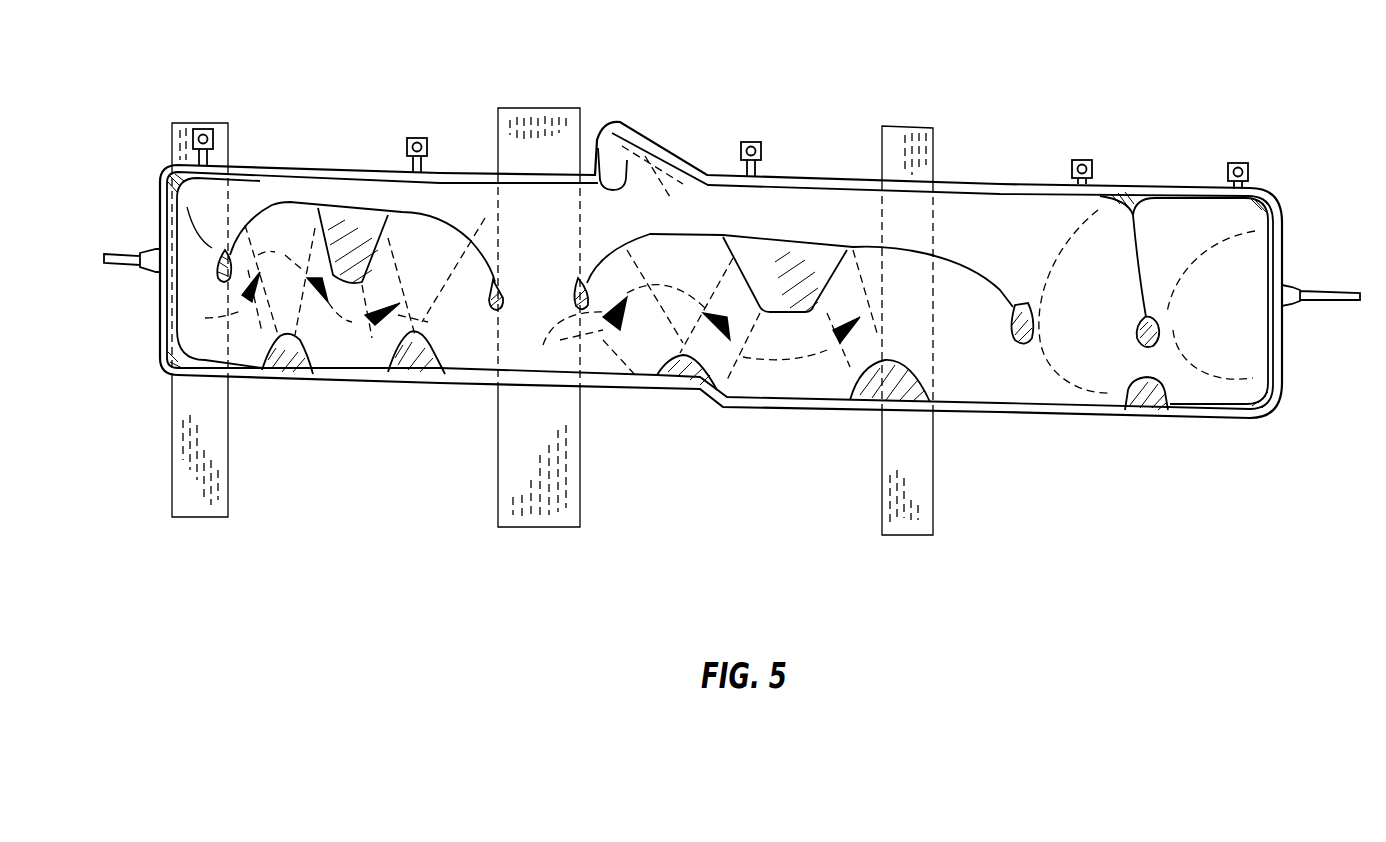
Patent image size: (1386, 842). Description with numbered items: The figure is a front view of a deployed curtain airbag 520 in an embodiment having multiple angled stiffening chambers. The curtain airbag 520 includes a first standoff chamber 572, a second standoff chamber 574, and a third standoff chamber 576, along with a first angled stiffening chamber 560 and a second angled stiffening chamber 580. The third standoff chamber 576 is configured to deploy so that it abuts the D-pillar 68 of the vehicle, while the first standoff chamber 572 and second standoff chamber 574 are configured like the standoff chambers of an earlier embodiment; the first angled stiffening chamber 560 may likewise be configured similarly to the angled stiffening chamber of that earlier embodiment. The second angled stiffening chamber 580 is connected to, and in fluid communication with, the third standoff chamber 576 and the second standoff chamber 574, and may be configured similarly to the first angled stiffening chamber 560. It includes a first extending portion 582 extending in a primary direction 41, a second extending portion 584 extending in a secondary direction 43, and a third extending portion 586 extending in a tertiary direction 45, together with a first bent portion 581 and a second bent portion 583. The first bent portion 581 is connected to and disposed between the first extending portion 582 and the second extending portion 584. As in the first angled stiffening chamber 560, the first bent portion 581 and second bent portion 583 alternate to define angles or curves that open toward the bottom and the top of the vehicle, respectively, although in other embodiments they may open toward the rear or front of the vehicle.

The curtain airbag 520 is at (1012, 133).
The first angled stiffening chamber 560 is at (773, 405).
The D-pillar 68 is at (218, 141).
The first standoff chamber 572 is at (947, 233).
The second standoff chamber 574 is at (543, 250).
The third standoff chamber 576 is at (177, 237).
The second angled stiffening chamber 580 is at (343, 378).
The first bent portion 581 is at (283, 217).
The first extending portion 582 is at (260, 338).
The second bent portion 583 is at (362, 345).
The second extending portion 584 is at (327, 237).
The third extending portion 586 is at (400, 315).
The primary direction 41 is at (242, 287).
The secondary direction 43 is at (312, 368).
The tertiary direction 45 is at (418, 372).